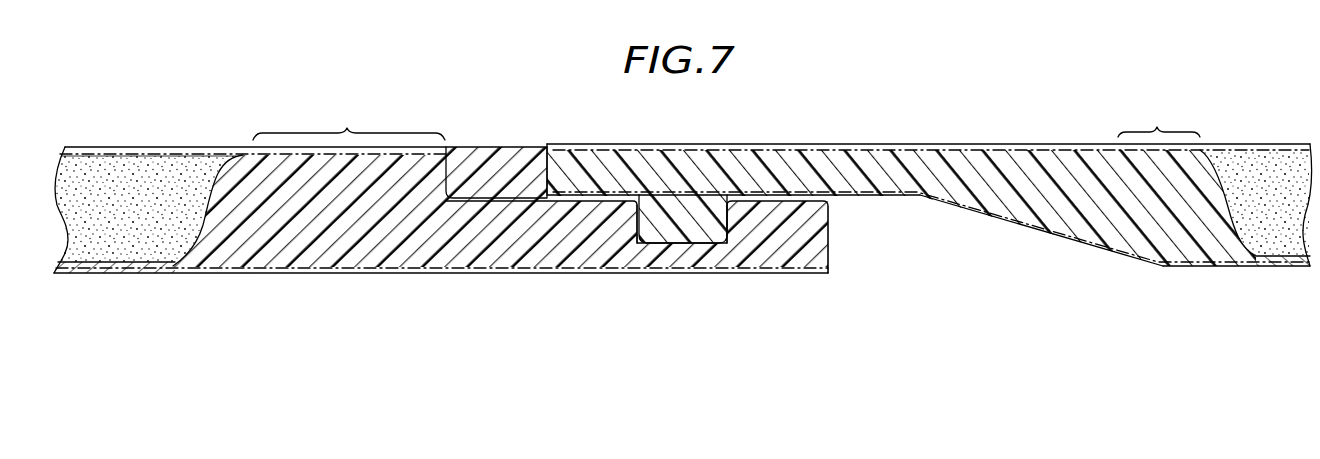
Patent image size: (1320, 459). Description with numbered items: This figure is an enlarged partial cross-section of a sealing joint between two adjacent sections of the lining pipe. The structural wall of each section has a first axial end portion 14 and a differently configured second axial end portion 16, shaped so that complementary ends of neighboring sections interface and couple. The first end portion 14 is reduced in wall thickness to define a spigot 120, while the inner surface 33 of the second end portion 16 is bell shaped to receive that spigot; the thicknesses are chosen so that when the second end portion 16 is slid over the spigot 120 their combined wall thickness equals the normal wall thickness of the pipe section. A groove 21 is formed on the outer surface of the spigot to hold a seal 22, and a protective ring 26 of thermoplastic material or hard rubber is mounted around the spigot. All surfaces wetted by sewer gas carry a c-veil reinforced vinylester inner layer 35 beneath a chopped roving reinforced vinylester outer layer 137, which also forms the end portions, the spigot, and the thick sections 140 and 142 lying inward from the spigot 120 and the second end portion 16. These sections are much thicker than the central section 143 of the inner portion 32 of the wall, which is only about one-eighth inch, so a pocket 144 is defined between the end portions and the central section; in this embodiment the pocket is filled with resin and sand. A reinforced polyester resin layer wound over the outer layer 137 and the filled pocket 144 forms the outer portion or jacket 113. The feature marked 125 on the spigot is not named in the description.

The first axial end portion 14 is at (298, 187).
The second axial end portion 16 is at (787, 167).
The groove 21 is at (657, 245).
The seal 22 is at (685, 223).
The protective ring 26 is at (493, 163).
The inner portion 32 is at (143, 261).
The inner surface of the second end portion 33 is at (967, 203).
The inner layer 35 is at (312, 273).
The outer portion or jacket 113 is at (118, 157).
The spigot 120 is at (782, 243).
The edge surface 125 is at (830, 230).
The outer layer 137 is at (340, 223).
The section inward from the spigot 140 is at (348, 128).
The section inward from the second end portion 142 is at (1157, 128).
The central section 143 is at (90, 270).
The pocket 144 is at (120, 180).